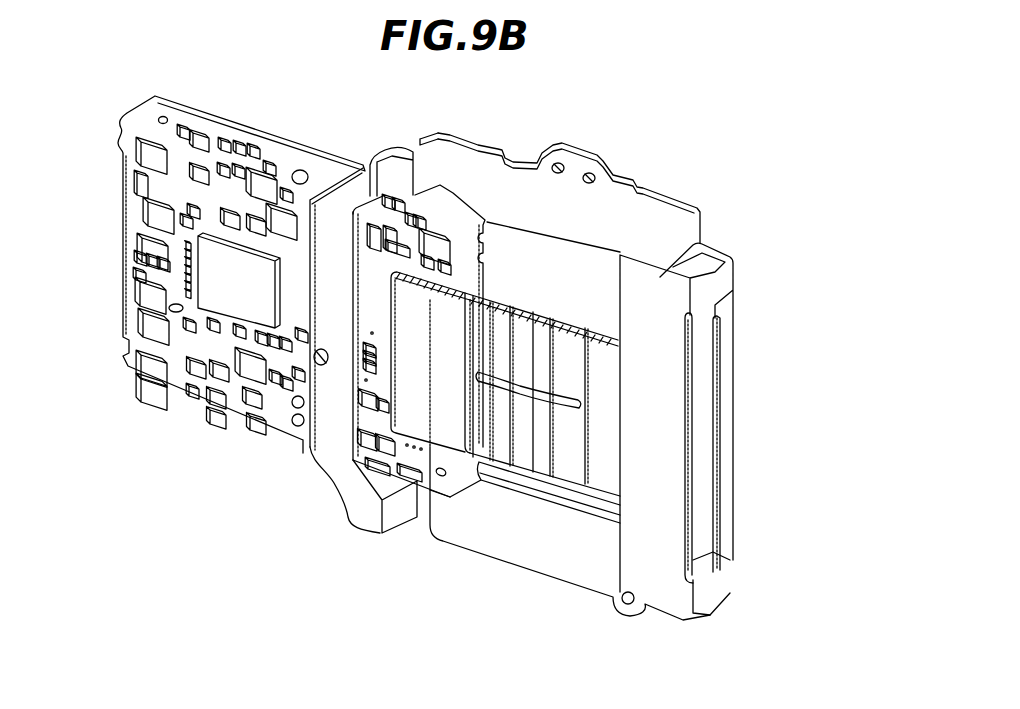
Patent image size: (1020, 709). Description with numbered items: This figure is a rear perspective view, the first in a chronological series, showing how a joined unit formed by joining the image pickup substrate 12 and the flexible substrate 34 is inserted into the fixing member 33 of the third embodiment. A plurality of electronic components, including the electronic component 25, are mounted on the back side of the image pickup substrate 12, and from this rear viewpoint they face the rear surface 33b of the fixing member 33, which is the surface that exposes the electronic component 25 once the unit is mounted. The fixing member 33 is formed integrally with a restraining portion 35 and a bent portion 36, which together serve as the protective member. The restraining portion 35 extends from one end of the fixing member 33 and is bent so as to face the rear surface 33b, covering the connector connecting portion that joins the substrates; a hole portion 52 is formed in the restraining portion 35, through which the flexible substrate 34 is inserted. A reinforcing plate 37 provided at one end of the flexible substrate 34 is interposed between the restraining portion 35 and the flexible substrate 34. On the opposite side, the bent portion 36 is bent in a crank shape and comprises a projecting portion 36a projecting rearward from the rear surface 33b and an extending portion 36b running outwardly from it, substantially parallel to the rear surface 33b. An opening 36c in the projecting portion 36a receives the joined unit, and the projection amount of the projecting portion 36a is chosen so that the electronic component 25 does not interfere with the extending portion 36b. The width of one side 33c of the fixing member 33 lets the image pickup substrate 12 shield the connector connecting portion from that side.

The image pickup substrate 12 is at (146, 118).
The electronic component 25 is at (223, 303).
The fixing member 33 is at (652, 217).
The rear surface 33b is at (477, 167).
The side 33c is at (702, 455).
The flexible substrate 34 is at (523, 460).
The restraining portion 35 is at (657, 297).
The bent portion 36 is at (320, 443).
The projecting portion 36a is at (417, 143).
The extending portion 36b is at (330, 196).
The opening 36c is at (370, 273).
The reinforcing plate 37 is at (437, 427).
The hole portion 52 is at (718, 323).